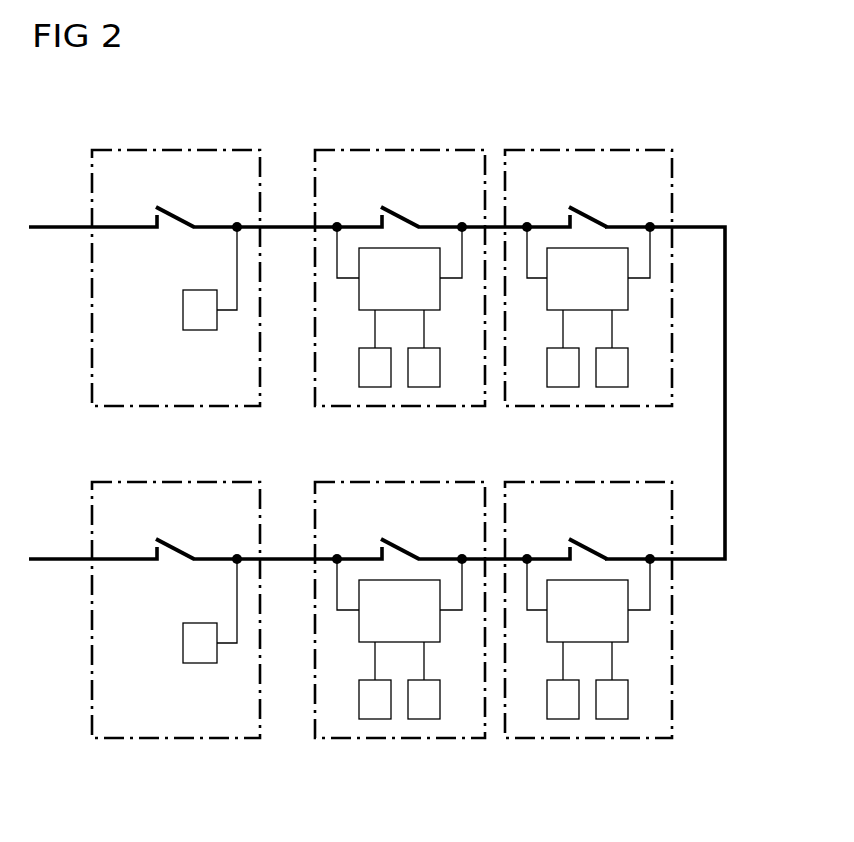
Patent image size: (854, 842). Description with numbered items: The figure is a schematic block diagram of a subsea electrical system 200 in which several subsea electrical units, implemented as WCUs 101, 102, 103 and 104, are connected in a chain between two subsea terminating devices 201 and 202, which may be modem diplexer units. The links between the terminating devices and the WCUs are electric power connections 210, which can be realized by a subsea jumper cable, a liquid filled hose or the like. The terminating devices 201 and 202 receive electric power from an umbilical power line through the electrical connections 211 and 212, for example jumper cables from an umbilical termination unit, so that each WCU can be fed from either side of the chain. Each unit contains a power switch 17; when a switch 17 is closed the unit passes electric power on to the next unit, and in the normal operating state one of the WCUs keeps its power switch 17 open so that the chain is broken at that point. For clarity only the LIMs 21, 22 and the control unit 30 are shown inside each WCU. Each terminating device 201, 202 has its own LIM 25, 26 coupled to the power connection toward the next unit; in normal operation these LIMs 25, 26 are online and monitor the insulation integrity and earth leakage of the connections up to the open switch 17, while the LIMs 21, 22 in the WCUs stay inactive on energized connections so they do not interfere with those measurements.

The subsea electrical system 200 is at (491, 98).
The subsea terminating device 201 is at (188, 150).
The subsea terminating device 202 is at (188, 482).
The WCU 101 is at (415, 150).
The WCU 102 is at (600, 150).
The WCU 103 is at (415, 482).
The WCU 104 is at (600, 482).
The power switch 17 is at (178, 212).
The electric power connection 210 is at (282, 227).
The electrical connection 211 is at (60, 227).
The electrical connection 212 is at (60, 559).
The LIM 25 is at (183, 310).
The LIM 26 is at (183, 643).
The control unit 30 is at (398, 248).
The LIM 21 is at (367, 348).
The LIM 22 is at (432, 348).